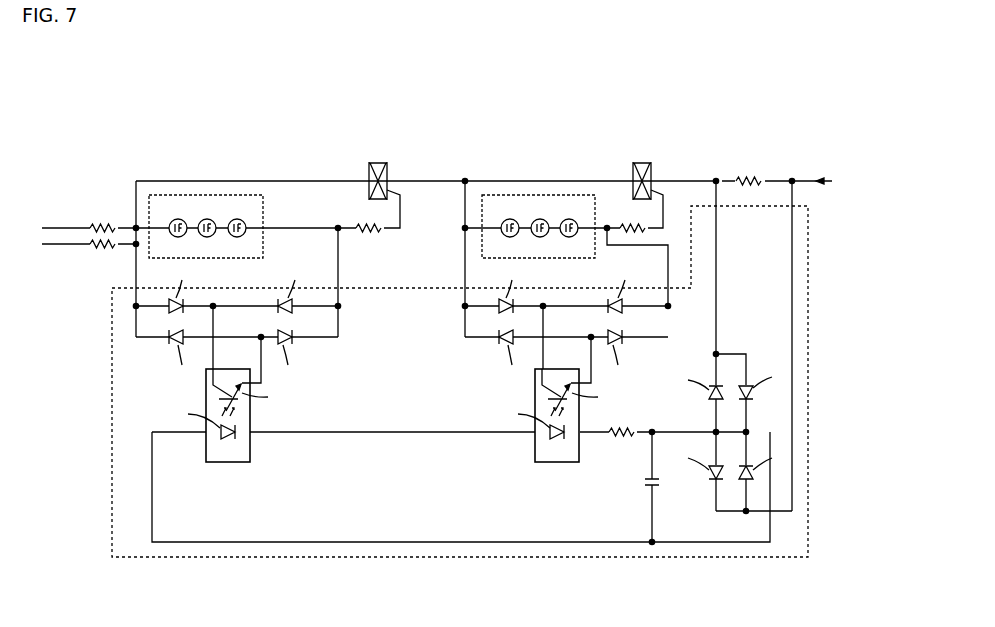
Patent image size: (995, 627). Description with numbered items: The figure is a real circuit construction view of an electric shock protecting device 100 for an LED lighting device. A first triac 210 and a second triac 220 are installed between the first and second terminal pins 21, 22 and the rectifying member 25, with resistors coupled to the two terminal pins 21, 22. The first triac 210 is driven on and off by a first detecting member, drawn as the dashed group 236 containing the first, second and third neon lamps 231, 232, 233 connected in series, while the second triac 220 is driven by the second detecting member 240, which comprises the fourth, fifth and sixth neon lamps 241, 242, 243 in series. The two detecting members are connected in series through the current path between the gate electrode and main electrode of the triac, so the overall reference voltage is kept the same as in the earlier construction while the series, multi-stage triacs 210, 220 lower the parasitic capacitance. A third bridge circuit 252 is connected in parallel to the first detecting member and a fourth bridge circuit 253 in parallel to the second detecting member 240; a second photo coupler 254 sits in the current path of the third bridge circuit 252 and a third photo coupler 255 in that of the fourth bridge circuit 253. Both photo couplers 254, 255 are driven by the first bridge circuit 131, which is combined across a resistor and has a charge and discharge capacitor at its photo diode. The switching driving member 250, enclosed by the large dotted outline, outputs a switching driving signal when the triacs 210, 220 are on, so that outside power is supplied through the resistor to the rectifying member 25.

The electric shock protecting device 100 is at (510, 120).
The first terminal pin 21 is at (58, 228).
The second terminal pin 22 is at (58, 244).
The rectifying member 25 is at (844, 190).
The first bridge circuit 131 is at (762, 420).
The first triac 210 is at (372, 162).
The second triac 220 is at (637, 162).
The first neon lamp 231 is at (178, 218).
The second neon lamp 232 is at (207, 218).
The third neon lamp 233 is at (244, 220).
The first LED lamp group 236 is at (228, 195).
The second detecting member 240 is at (560, 195).
The fourth neon lamp 241 is at (510, 218).
The fifth neon lamp 242 is at (540, 218).
The sixth neon lamp 243 is at (576, 220).
The switching driving member 250 is at (808, 232).
The third bridge circuit 252 is at (162, 348).
The fourth bridge circuit 253 is at (683, 304).
The second photo coupler 254 is at (228, 462).
The third photo coupler 255 is at (558, 462).